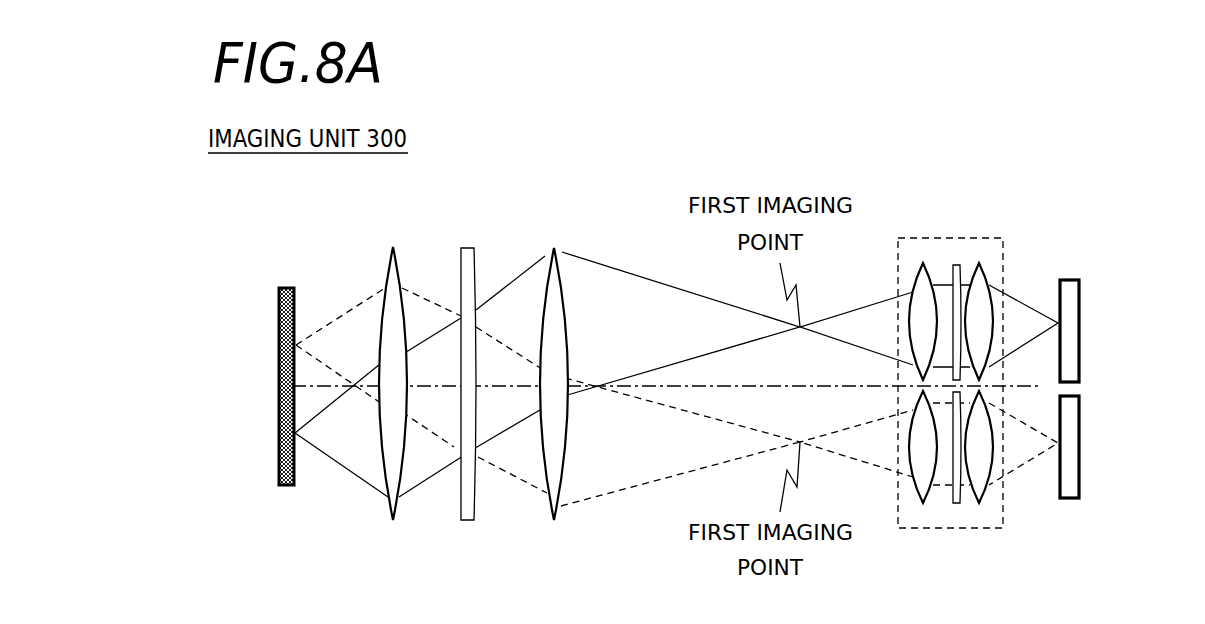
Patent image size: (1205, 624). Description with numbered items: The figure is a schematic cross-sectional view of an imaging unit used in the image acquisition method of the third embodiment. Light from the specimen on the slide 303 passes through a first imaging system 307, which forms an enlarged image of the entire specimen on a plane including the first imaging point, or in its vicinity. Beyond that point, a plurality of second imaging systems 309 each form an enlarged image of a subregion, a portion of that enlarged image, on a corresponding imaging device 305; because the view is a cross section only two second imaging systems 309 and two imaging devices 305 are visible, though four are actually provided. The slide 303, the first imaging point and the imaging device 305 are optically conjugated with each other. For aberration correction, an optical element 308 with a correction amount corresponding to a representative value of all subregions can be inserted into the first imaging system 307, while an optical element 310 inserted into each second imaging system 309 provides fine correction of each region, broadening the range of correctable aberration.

The slide 303 is at (280, 490).
The imaging device 305 is at (1075, 322).
The first imaging system 307 is at (475, 381).
The optical element 308 is at (460, 521).
The second imaging system 309 is at (946, 386).
The optical element 310 is at (957, 265).